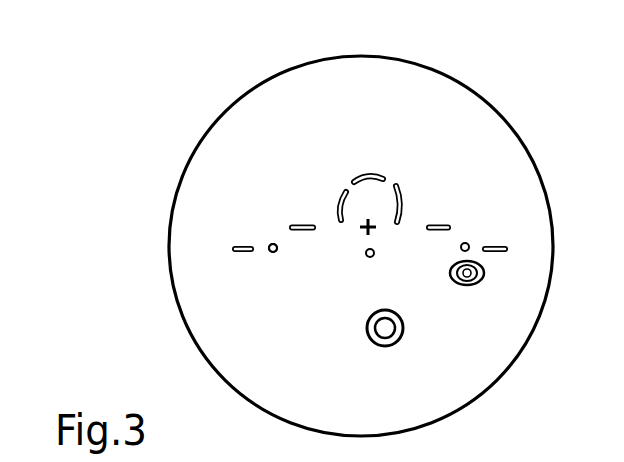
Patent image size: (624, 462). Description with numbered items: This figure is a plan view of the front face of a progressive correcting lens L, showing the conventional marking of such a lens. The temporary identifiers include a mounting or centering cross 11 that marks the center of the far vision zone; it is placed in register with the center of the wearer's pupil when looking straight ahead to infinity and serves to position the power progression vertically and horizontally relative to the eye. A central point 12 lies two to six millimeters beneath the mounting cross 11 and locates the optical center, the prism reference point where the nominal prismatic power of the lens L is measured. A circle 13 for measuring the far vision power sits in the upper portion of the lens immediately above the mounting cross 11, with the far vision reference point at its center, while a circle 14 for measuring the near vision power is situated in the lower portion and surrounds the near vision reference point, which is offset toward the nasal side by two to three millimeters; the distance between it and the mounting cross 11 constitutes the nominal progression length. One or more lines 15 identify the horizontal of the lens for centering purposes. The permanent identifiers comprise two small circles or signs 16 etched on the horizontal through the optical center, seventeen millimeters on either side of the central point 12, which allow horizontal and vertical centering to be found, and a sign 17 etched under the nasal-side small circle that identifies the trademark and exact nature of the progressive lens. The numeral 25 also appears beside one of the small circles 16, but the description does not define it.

The progressive correcting lens L is at (509, 118).
The mounting or centering cross 11 is at (377, 223).
The central point 12 is at (368, 258).
The circle for measuring the far vision power 13 is at (359, 173).
The circle for measuring the near vision power 14 is at (381, 347).
The lines identifying the horizontal 15 is at (297, 224).
The small circles or signs 16 is at (271, 244).
The sign identifying the trademark and nature of the progressive lens 17 is at (468, 287).
The small circle marker 25 is at (271, 265).